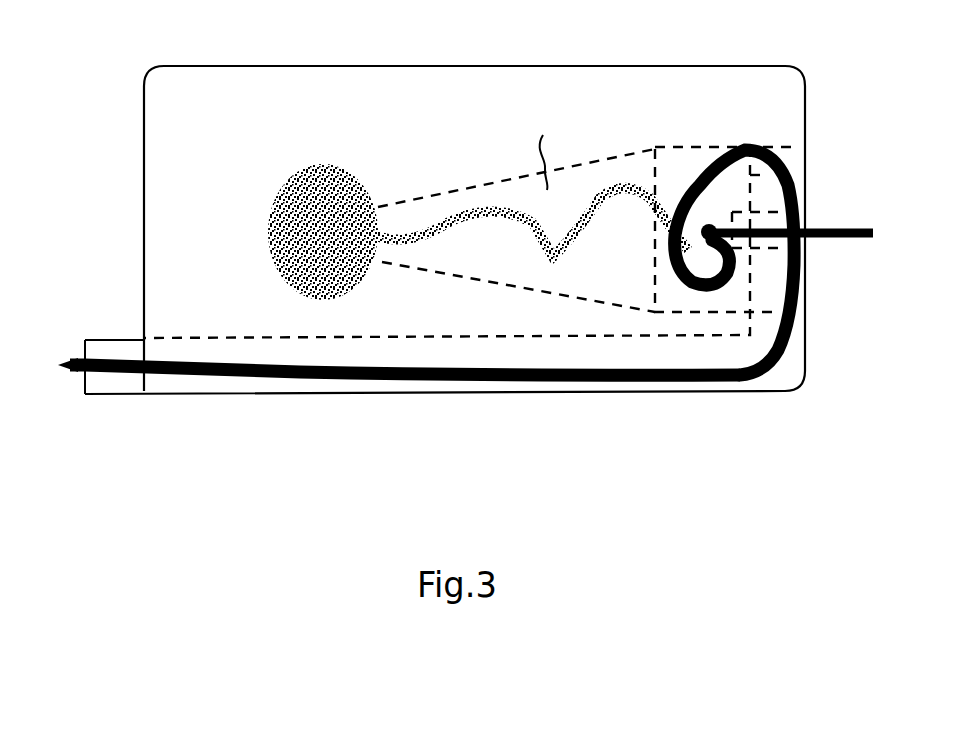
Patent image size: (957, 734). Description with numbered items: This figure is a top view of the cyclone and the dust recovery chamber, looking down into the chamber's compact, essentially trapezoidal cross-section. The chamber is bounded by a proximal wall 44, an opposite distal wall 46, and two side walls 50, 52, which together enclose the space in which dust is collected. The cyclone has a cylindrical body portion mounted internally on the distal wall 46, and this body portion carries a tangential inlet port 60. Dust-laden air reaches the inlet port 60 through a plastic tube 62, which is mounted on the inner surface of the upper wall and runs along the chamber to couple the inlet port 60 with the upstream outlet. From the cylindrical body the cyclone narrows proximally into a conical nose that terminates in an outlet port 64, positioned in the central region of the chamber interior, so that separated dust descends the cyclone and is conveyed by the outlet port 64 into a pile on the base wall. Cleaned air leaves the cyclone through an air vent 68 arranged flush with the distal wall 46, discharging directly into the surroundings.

The proximal wall 44 is at (144, 266).
The distal wall 46 is at (803, 93).
The side wall 50 is at (535, 393).
The side wall 52 is at (438, 65).
The tangential inlet port 60 is at (788, 164).
The plastic tube 62 is at (207, 362).
The outlet port 64 is at (363, 240).
The air vent 68 is at (804, 222).